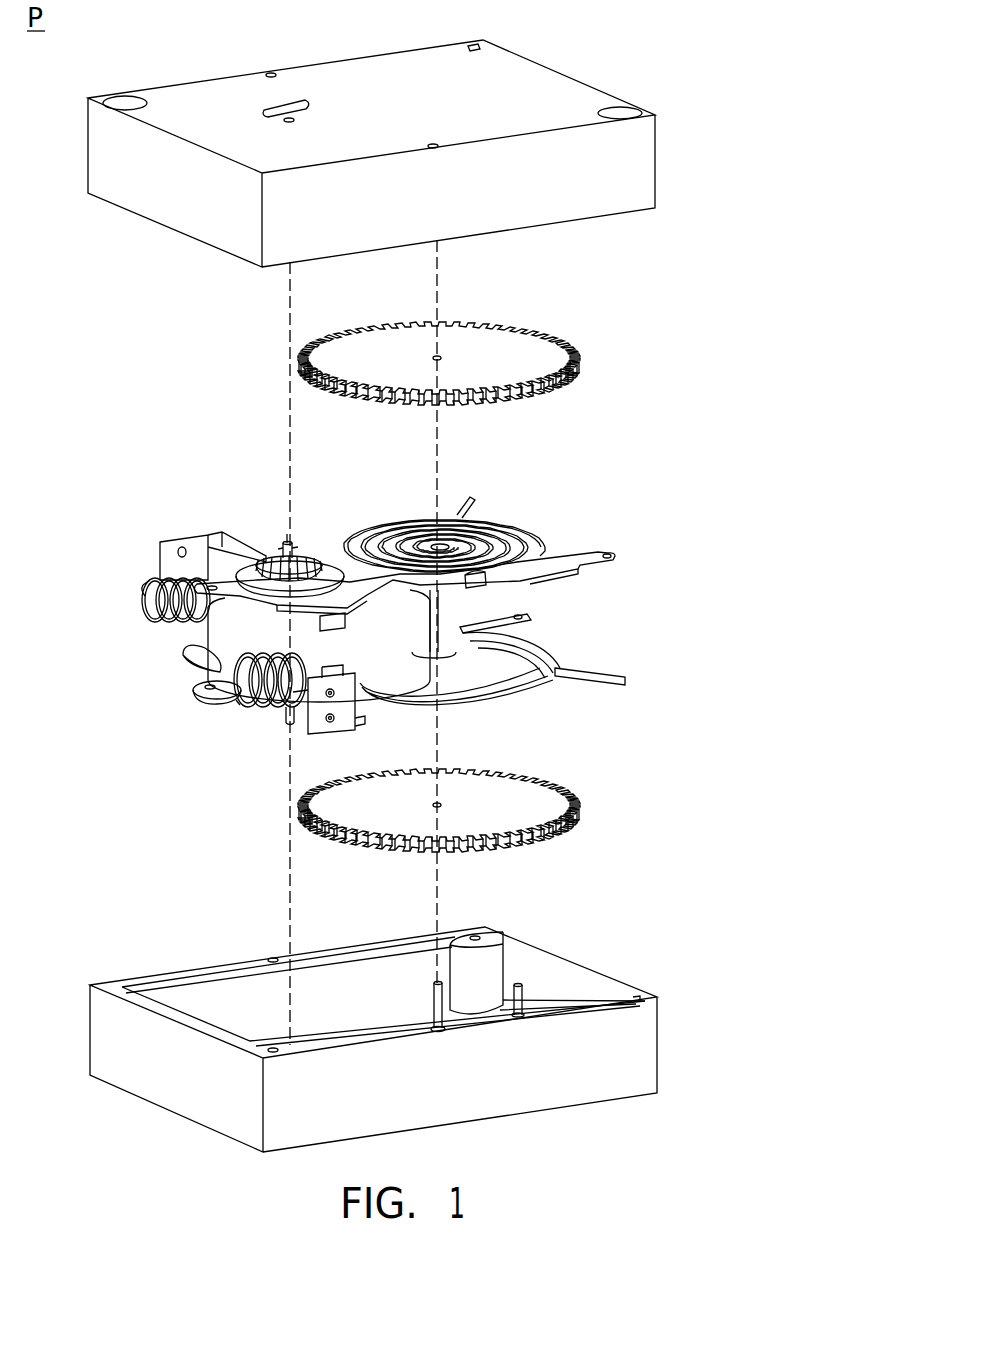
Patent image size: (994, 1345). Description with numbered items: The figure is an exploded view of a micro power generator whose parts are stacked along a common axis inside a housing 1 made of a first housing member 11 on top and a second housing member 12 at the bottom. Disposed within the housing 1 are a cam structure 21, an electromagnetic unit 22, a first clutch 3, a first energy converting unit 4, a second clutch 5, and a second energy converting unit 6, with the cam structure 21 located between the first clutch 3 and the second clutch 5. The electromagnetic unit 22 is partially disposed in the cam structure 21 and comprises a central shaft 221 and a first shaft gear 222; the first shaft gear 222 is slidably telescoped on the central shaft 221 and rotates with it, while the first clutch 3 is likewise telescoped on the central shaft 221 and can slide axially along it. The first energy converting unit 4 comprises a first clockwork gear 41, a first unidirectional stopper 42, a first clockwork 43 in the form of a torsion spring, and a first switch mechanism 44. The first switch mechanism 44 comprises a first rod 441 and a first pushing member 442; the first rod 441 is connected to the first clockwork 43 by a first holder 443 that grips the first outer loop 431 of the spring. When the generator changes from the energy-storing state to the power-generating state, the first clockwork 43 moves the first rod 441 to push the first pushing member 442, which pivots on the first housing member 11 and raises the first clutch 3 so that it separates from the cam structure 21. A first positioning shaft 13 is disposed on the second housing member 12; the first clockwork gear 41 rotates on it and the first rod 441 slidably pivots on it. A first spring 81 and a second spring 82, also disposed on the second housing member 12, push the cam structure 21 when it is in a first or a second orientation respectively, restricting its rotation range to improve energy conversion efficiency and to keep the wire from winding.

The housing 1 is at (716, 242).
The first housing member 11 is at (170, 202).
The second housing member 12 is at (170, 1083).
The first positioning shaft 13 is at (440, 998).
The cam structure 21 is at (223, 657).
The electromagnetic unit 22 is at (270, 428).
The central shaft 221 is at (287, 560).
The first shaft gear 222 is at (270, 557).
The first clutch 3 is at (250, 567).
The first energy converting unit 4 is at (717, 352).
The first clockwork gear 41 is at (518, 350).
The first unidirectional stopper 42 is at (168, 550).
The first clockwork 43 is at (525, 540).
The first outer loop 431 is at (512, 568).
The first switch mechanism 44 is at (776, 507).
The first rod 441 is at (557, 563).
The first pushing member 442 is at (210, 635).
The first holder 443 is at (472, 580).
The second clutch 5 is at (285, 710).
The second energy converting unit 6 is at (653, 630).
The first spring 81 is at (147, 602).
The second spring 82 is at (243, 703).